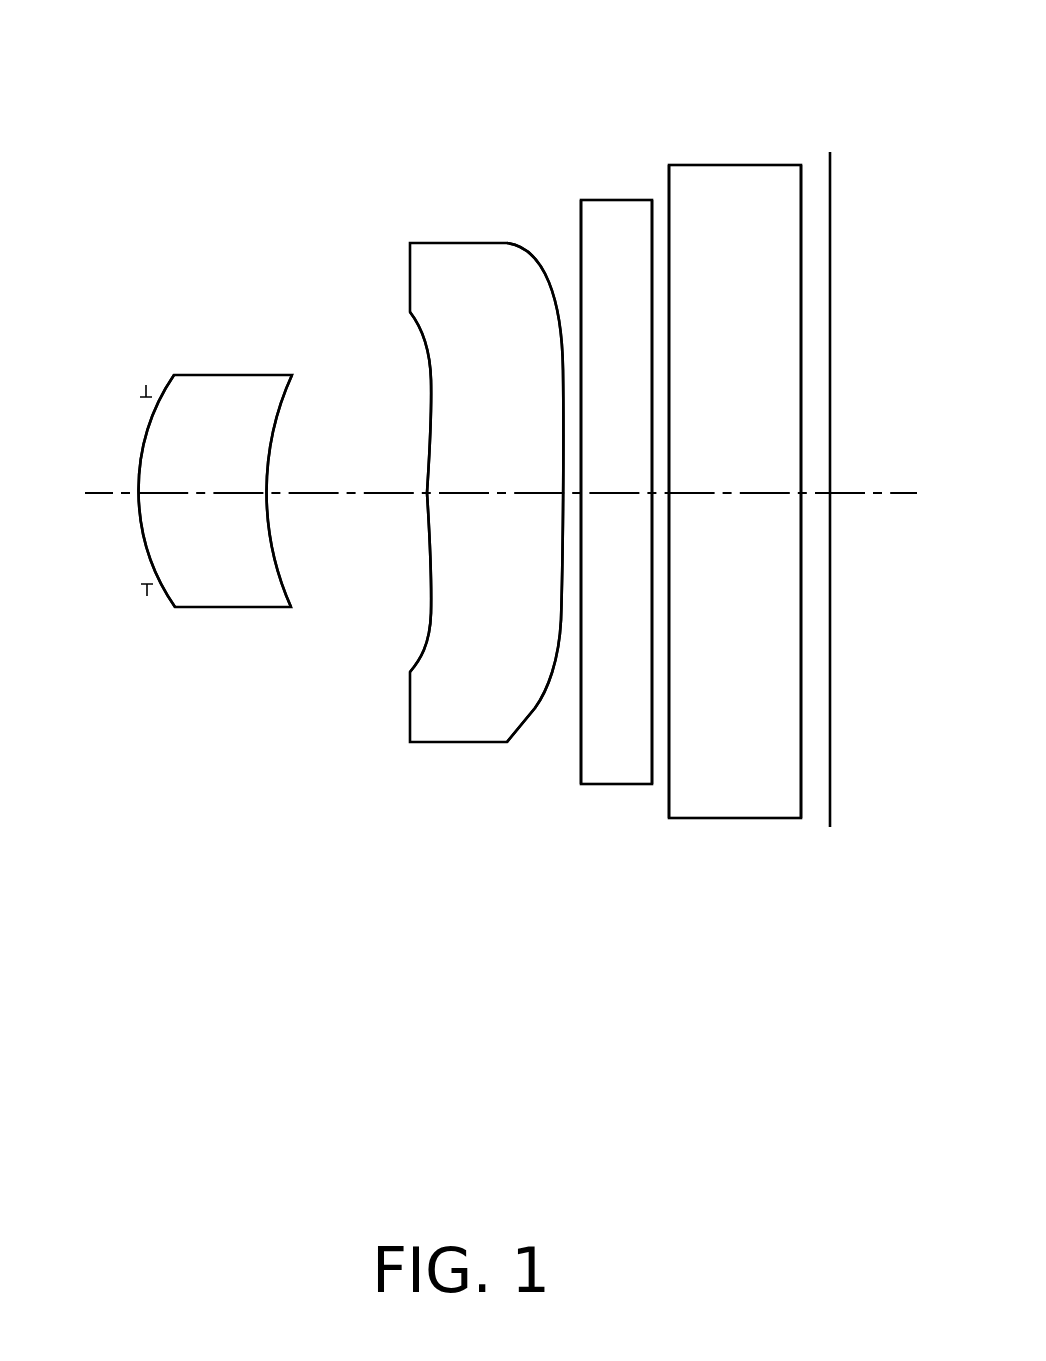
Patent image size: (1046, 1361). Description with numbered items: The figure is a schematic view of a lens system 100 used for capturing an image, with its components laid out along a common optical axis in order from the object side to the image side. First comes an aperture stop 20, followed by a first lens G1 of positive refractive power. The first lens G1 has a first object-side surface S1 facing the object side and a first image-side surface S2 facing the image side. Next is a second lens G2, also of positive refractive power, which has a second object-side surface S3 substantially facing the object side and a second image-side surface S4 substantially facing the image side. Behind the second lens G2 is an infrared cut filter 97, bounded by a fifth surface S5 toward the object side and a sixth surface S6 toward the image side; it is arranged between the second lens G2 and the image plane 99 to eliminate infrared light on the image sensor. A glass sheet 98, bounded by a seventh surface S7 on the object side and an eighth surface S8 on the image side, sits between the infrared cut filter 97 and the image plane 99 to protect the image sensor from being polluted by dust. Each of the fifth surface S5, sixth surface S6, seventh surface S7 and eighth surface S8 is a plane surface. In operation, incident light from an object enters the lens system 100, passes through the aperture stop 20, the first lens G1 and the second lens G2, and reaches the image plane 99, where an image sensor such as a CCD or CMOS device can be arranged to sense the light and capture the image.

The lens system 100 is at (297, 157).
The aperture stop 20 is at (141, 393).
The first lens G1 is at (214, 375).
The first object-side surface S1 is at (140, 517).
The first image-side surface S2 is at (282, 565).
The second lens G2 is at (458, 243).
The second object-side surface S3 is at (430, 378).
The second image-side surface S4 is at (533, 710).
The infrared cut filter 97 is at (603, 200).
The fifth surface S5 is at (580, 227).
The sixth surface S6 is at (657, 212).
The glass sheet 98 is at (723, 165).
The seventh surface S7 is at (669, 790).
The eighth surface S8 is at (801, 801).
The image plane 99 is at (830, 175).